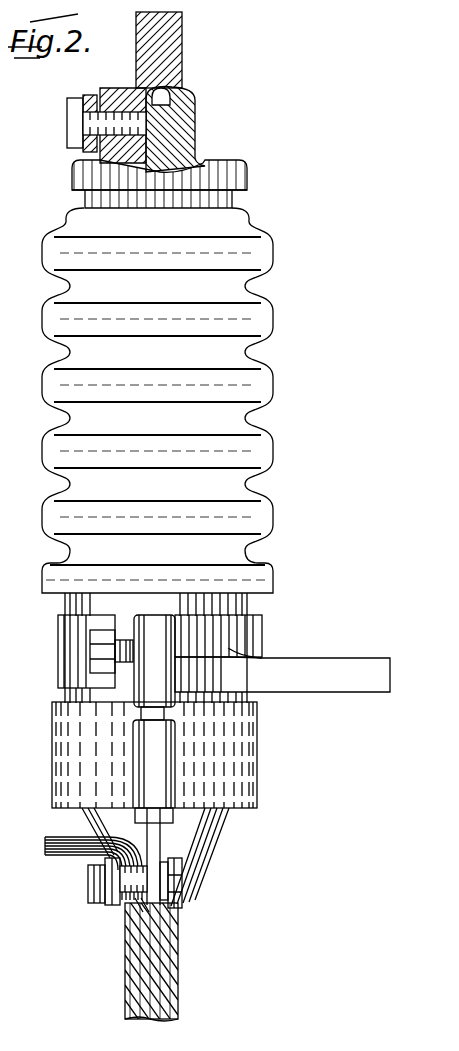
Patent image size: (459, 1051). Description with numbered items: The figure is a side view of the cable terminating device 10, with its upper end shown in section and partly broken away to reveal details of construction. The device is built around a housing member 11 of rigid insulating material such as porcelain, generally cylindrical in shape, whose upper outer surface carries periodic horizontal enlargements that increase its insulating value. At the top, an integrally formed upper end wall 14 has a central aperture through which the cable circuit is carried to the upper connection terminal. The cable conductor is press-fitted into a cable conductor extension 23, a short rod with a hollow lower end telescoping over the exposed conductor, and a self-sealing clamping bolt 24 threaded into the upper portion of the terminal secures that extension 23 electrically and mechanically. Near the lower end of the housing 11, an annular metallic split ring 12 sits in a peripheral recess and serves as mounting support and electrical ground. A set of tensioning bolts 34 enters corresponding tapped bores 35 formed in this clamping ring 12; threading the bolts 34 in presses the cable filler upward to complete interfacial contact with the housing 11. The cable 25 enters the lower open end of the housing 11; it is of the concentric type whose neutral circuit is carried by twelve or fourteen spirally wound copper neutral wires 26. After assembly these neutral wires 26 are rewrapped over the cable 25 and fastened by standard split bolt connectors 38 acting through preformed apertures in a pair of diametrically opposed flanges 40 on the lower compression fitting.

The cable terminating device 10 is at (320, 815).
The housing member 11 is at (243, 322).
The annular metallic split ring 12 is at (73, 645).
The upper end wall 14 is at (31, 728).
The cable conductor extension 23 is at (160, 104).
The self-sealing clamping bolt 24 is at (74, 114).
The cable 25 is at (164, 997).
The neutral wires 26 is at (125, 992).
The tensioning bolts 34 is at (158, 813).
The tapped bores 35 is at (31, 698).
The split bolt connectors 38 is at (110, 905).
The flanges 40 is at (152, 843).